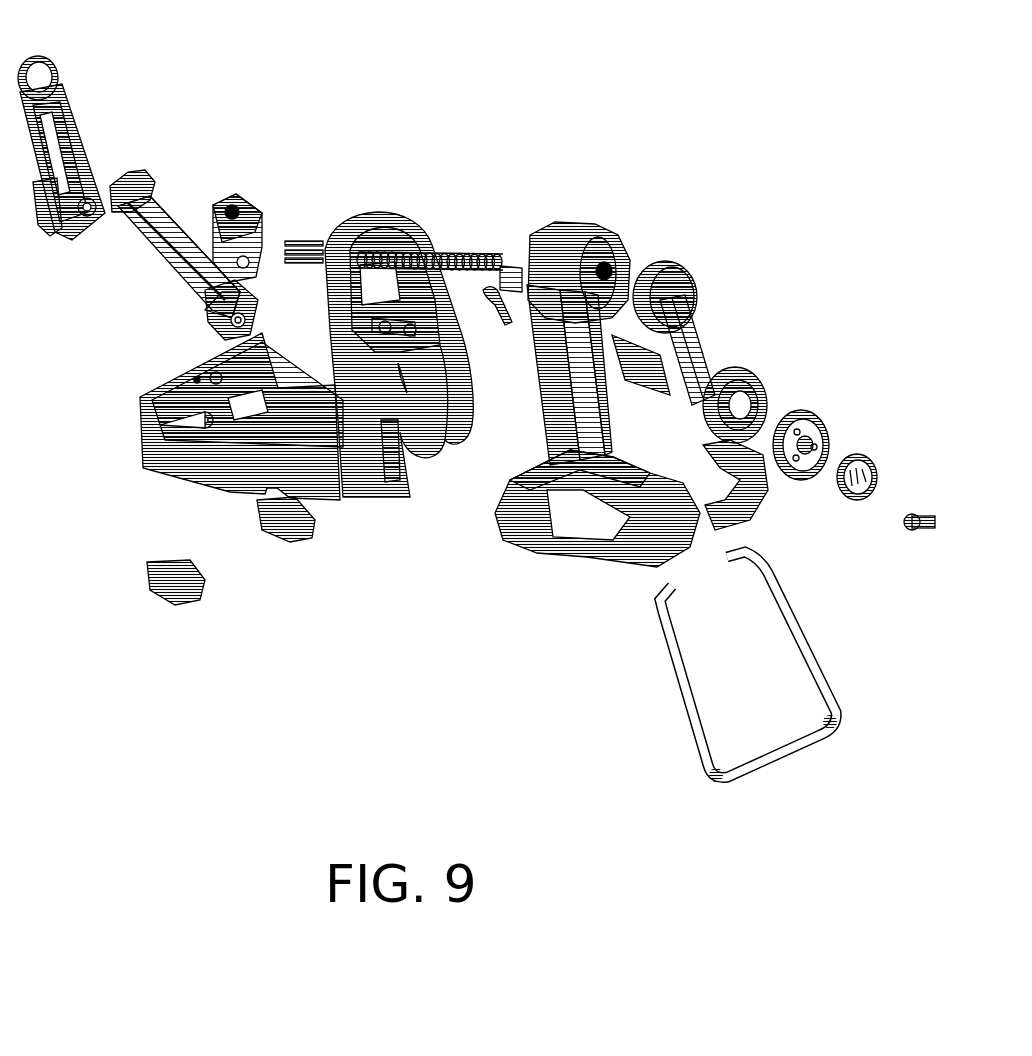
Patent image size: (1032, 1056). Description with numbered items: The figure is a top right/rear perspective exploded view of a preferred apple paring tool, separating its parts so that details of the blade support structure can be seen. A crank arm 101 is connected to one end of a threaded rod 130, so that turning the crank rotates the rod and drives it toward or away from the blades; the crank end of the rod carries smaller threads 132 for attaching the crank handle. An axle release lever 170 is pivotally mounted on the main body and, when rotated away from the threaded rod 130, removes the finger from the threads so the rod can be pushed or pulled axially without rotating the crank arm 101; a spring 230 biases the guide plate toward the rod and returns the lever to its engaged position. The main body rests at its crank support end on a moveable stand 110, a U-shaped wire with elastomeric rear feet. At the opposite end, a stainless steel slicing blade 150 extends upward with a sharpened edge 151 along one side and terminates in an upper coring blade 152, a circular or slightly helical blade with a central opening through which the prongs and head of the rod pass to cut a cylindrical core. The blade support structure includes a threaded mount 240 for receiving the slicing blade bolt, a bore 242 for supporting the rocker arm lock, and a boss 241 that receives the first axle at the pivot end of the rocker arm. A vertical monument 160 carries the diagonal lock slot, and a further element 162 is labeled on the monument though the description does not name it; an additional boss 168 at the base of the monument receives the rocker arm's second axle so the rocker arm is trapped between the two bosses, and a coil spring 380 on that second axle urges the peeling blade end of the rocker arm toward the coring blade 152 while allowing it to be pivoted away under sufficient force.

The crank arm 101 is at (700, 350).
The moveable stand 110 is at (682, 688).
The threaded rod 130 is at (427, 252).
The smaller threads 132 is at (610, 237).
The slicing blade 150 is at (104, 101).
The sharpened edge 151 is at (90, 155).
The upper coring blade 152 is at (56, 63).
The vertical monument 160 is at (255, 215).
The fastener 162 is at (232, 206).
The boss 168 is at (286, 232).
The axle release lever 170 is at (500, 265).
The spring 230 is at (508, 324).
The threaded mount 240 is at (187, 368).
The boss 241 is at (188, 425).
The bore 242 is at (185, 377).
The coil spring 380 is at (248, 300).